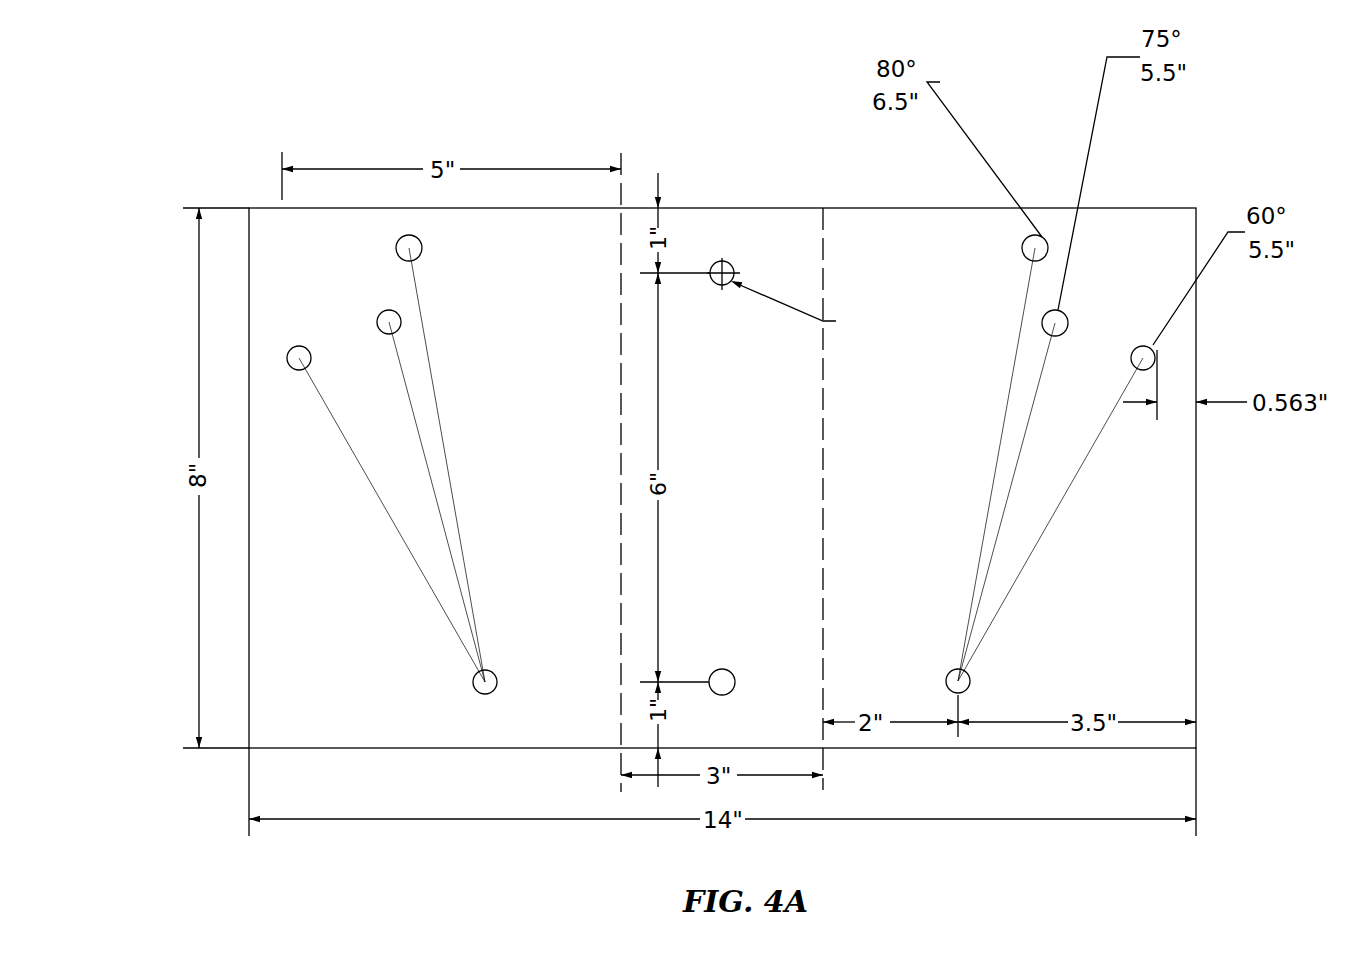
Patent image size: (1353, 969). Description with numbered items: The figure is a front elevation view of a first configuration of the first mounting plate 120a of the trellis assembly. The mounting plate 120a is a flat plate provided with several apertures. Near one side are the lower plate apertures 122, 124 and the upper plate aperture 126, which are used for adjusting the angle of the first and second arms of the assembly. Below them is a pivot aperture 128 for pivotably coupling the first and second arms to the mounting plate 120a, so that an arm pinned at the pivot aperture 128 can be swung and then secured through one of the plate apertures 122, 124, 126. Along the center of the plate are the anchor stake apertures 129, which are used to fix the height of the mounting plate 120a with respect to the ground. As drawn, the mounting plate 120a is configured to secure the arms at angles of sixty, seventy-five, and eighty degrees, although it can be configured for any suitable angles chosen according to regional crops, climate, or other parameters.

The first mounting plate 120a is at (1196, 607).
The lower plate aperture 122 is at (287, 356).
The lower plate aperture 124 is at (378, 316).
The upper plate aperture 126 is at (399, 240).
The pivot aperture 128 is at (485, 694).
The anchor stake aperture 129 is at (733, 262).